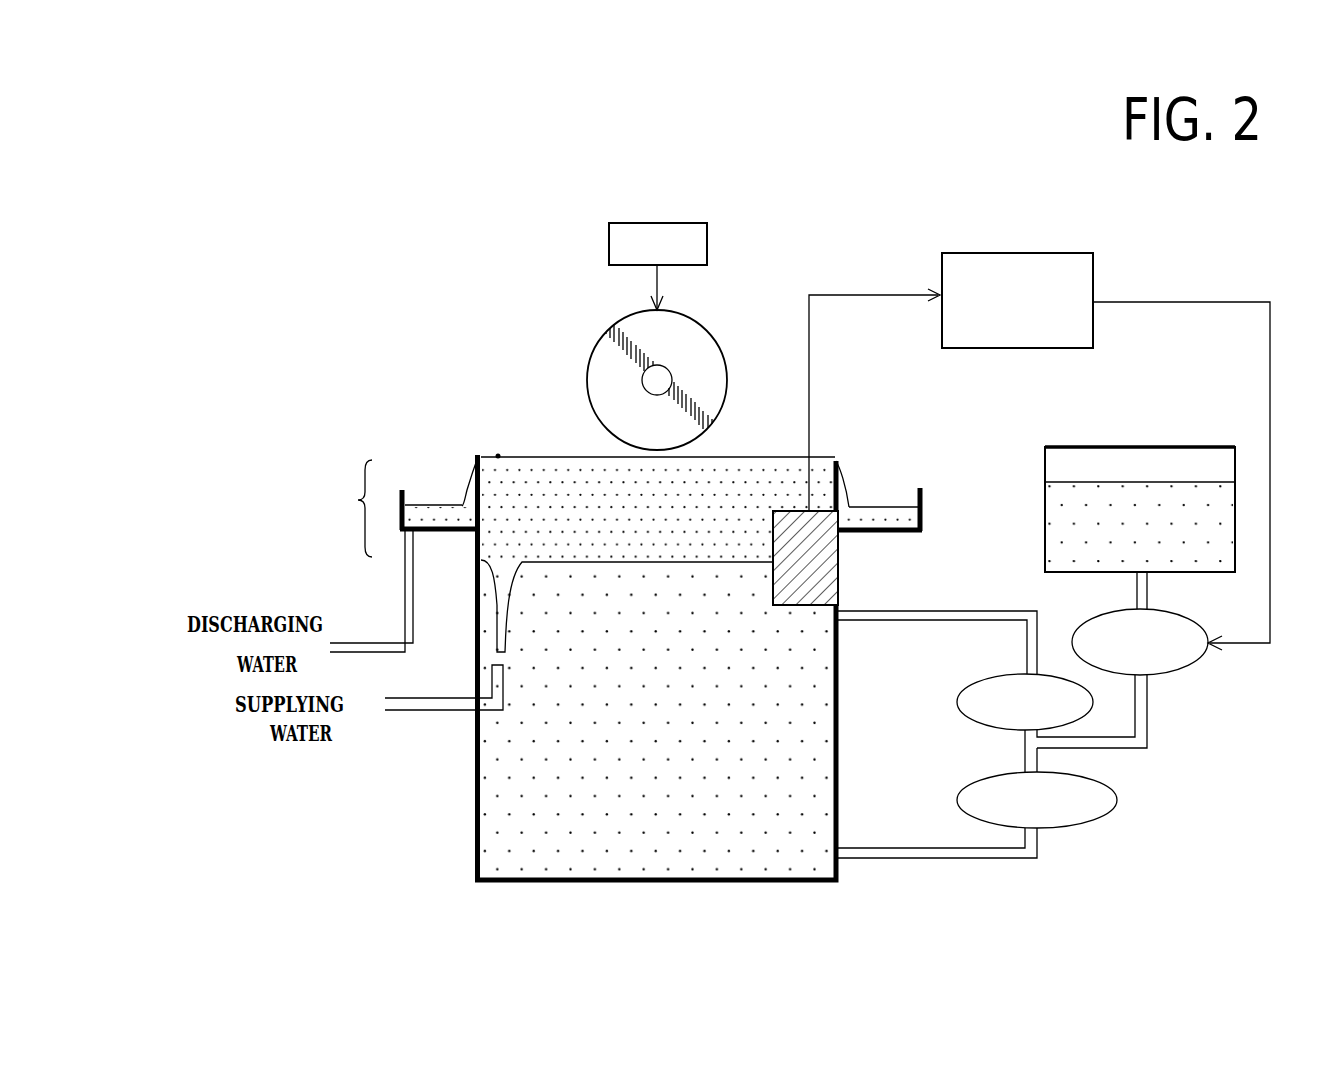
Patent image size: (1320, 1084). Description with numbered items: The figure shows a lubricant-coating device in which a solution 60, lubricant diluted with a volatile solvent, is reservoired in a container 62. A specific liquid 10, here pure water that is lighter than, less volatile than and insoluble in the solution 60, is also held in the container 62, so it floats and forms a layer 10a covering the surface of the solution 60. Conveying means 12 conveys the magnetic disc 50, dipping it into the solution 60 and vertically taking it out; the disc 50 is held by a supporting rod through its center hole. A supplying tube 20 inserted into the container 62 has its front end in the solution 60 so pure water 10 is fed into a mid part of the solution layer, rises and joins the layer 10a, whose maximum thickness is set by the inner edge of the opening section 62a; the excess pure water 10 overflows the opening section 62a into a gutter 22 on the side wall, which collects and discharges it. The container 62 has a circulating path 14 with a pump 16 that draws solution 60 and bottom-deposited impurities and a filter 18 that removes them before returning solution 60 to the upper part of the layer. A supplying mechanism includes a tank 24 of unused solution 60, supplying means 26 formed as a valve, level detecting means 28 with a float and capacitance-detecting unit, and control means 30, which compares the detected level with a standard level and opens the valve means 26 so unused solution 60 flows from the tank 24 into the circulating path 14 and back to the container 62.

The specific liquid 10 is at (535, 465).
The layer of the pure water 10a is at (335, 508).
The conveying means 12 is at (703, 246).
The circulating path 14 is at (972, 612).
The pump 16 is at (978, 682).
The filter 18 is at (1107, 808).
The supplying tube 20 is at (428, 710).
The gutter 22 is at (413, 490).
The tank 24 is at (1045, 500).
The supplying means 26 is at (1183, 668).
The level detecting means 28 is at (838, 580).
The control means 30 is at (1040, 252).
The magnetic disc 50 is at (596, 350).
The solution 60 is at (557, 866).
The container 62 is at (838, 720).
The opening section 62a is at (497, 455).